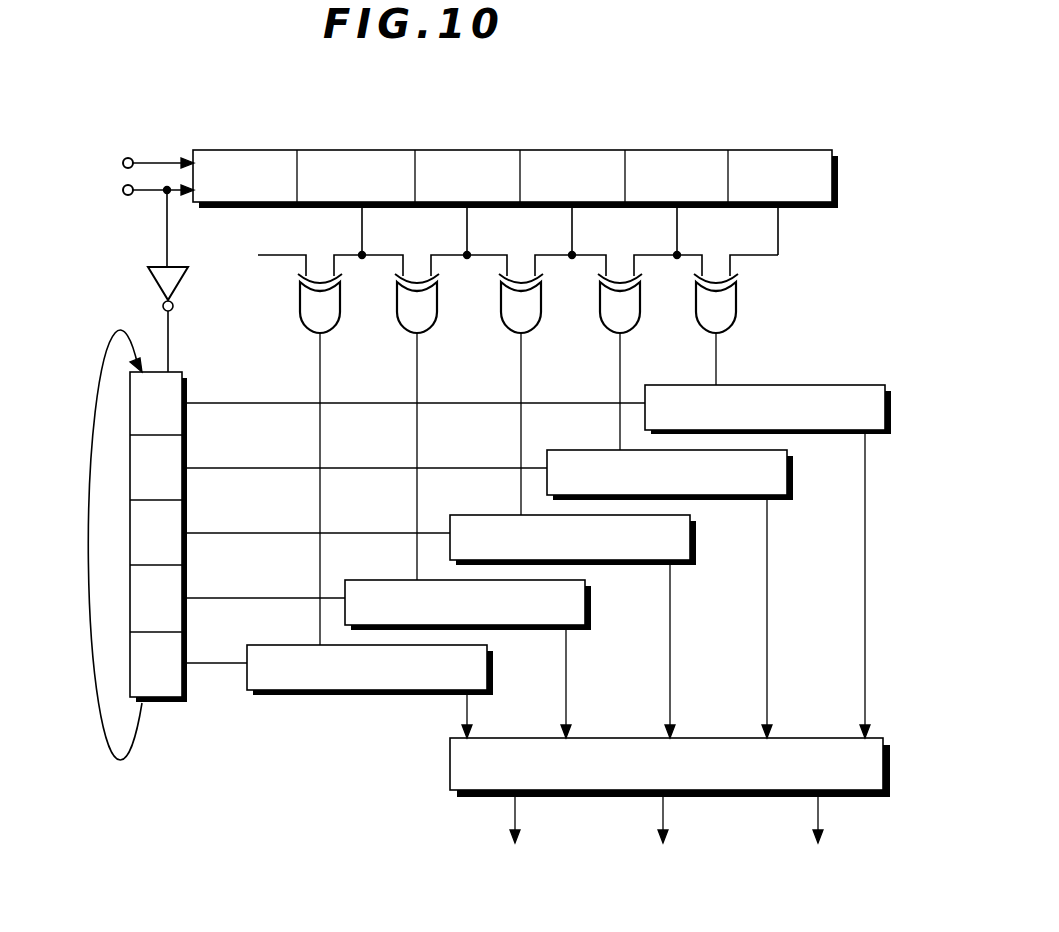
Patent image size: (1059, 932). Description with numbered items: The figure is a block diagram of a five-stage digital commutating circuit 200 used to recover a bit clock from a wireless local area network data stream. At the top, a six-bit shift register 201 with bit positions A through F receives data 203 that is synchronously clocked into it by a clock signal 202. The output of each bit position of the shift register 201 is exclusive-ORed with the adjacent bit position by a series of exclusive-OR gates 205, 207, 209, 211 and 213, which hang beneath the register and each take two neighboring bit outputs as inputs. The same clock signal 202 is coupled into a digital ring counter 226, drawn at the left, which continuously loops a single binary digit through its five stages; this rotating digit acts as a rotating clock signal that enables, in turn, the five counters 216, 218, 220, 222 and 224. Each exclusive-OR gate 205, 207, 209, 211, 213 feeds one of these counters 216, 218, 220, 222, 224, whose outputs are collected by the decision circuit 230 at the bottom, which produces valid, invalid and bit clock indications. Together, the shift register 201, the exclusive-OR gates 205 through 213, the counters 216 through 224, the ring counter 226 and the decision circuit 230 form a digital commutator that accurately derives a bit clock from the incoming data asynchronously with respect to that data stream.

The digital commutating circuit 200 is at (500, 88).
The shift register 201 is at (838, 182).
The clock signal 202 is at (154, 193).
The data 203 is at (147, 158).
The exclusive-OR gate 205 is at (736, 298).
The exclusive-OR gate 207 is at (636, 315).
The exclusive-OR gate 209 is at (537, 320).
The exclusive-OR gate 211 is at (431, 320).
The exclusive-OR gate 213 is at (334, 320).
The counter 216 is at (827, 384).
The counter 218 is at (793, 473).
The counter 220 is at (697, 538).
The counter 222 is at (592, 603).
The counter 224 is at (496, 672).
The ring counter 226 is at (188, 378).
The decision circuit 230 is at (449, 762).